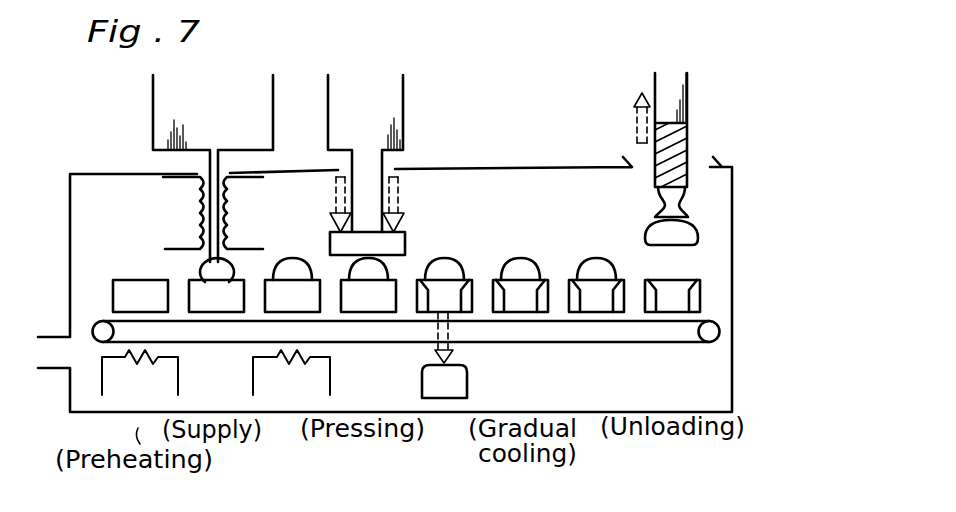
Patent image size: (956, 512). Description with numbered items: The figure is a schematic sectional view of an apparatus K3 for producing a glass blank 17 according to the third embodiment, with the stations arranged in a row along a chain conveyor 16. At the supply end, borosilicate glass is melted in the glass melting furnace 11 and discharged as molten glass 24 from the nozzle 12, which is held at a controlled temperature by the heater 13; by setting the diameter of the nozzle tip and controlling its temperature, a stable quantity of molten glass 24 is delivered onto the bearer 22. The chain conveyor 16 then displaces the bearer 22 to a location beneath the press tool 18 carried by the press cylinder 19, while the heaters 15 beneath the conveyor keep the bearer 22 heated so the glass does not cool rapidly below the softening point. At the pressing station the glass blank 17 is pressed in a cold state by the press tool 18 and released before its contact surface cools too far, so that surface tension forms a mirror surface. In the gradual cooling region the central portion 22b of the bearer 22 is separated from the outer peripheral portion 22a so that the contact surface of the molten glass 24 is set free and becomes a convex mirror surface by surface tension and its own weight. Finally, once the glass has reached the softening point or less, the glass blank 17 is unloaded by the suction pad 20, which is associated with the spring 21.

The glass melting furnace 11 is at (162, 113).
The nozzle 12 is at (210, 245).
The heater 13 is at (243, 247).
The molten glass 24 is at (200, 272).
The bearer 22 is at (120, 295).
The outer peripheral portion 22a is at (467, 278).
The central portion 22b is at (453, 380).
The press cylinder 19 is at (388, 117).
The press tool 18 is at (393, 242).
The spring 21 is at (677, 138).
The suction pad 20 is at (663, 207).
The glass blank 17 is at (680, 228).
The chain conveyor 16 is at (568, 330).
The heaters 15 is at (178, 357).
The apparatus K3 is at (768, 147).